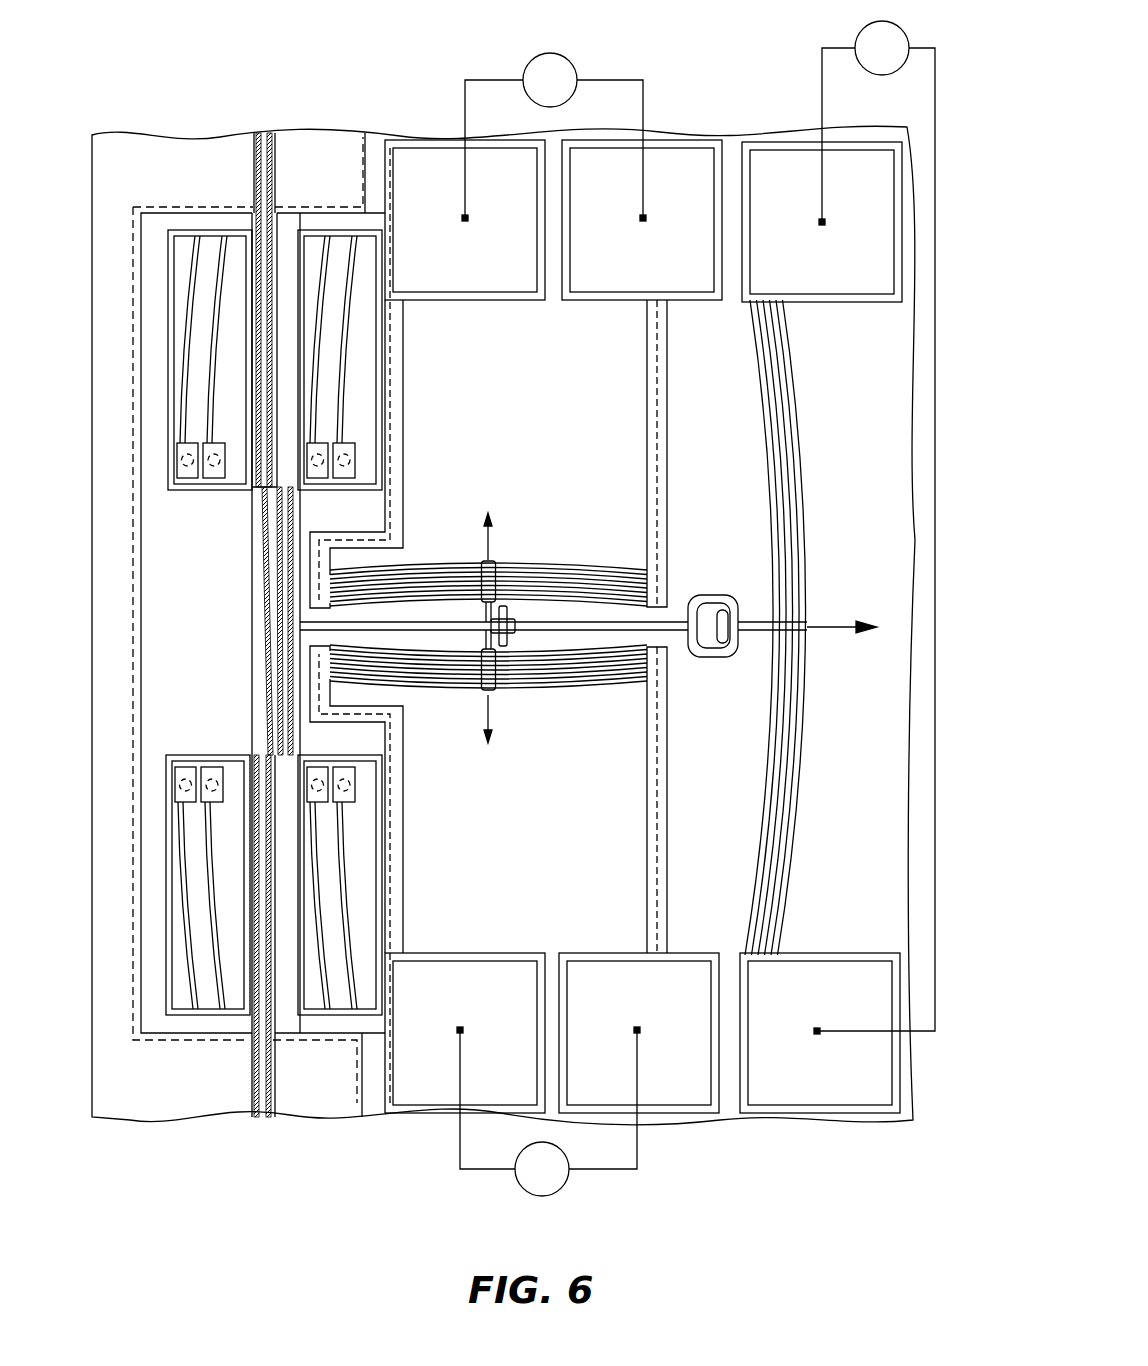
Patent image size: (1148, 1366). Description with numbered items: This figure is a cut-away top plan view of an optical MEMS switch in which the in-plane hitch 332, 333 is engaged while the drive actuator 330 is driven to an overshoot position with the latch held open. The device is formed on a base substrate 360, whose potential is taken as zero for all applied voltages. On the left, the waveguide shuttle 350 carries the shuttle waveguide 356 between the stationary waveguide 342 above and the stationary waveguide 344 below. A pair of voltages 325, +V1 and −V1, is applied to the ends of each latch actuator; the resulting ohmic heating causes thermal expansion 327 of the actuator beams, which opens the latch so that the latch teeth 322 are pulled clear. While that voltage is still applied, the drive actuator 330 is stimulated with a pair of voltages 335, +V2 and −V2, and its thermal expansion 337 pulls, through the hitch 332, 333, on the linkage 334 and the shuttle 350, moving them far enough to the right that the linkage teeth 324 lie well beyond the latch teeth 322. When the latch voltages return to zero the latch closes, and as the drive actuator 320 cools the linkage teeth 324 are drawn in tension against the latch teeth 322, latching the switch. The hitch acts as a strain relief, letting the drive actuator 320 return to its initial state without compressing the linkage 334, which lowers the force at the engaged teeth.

The drive actuator 320 is at (580, 534).
The latch teeth 322 is at (483, 605).
The linkage teeth 324 is at (508, 616).
The pair of voltages 325 is at (541, 56).
The thermal expansion of latch actuator 327 is at (488, 545).
The drive actuator 330 is at (882, 579).
The hitch 332 is at (723, 646).
The hitch 333 is at (700, 597).
The linkage 334 is at (565, 631).
The pair of voltages 335 is at (878, 75).
The thermal expansion 337 is at (826, 628).
The stationary waveguide 342 is at (262, 153).
The stationary waveguide 344 is at (260, 1093).
The waveguide shuttle 350 is at (213, 613).
The shuttle waveguide 356 is at (265, 673).
The base substrate 360 is at (455, 127).